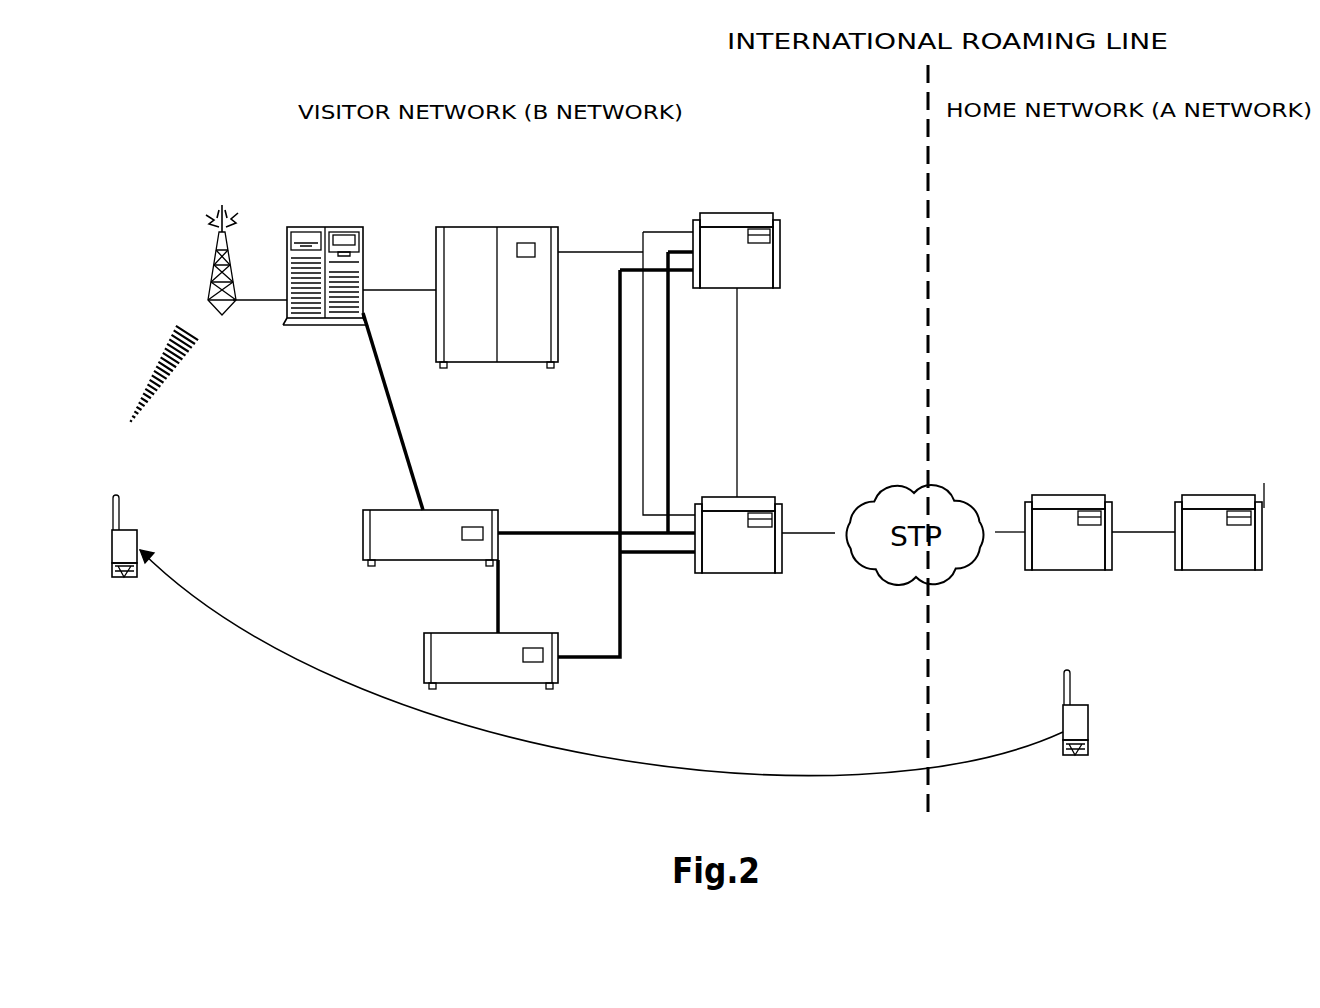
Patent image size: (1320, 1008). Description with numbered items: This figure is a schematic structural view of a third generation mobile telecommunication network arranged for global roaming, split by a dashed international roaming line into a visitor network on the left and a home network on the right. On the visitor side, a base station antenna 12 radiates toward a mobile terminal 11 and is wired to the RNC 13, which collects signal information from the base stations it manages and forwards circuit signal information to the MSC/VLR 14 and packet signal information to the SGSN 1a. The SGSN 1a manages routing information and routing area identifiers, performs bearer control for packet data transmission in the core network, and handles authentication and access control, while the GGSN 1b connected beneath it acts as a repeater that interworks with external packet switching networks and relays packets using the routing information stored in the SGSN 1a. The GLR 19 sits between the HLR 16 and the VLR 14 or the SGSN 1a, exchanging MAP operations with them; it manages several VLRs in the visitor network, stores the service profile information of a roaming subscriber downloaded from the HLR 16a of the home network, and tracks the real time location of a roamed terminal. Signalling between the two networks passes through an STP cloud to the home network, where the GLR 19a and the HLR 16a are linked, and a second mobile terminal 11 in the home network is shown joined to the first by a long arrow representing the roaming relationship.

The SGSN 1a is at (470, 510).
The GGSN 1b is at (470, 633).
The mobile station 11 is at (137, 541).
The base station antenna 12 is at (213, 273).
The RNC 13 is at (325, 227).
The MSC/VLR 14 is at (528, 227).
The HLR 16 is at (755, 213).
The GLR 19 is at (755, 497).
The GLR 19a is at (1088, 495).
The HLR 16a is at (1236, 495).